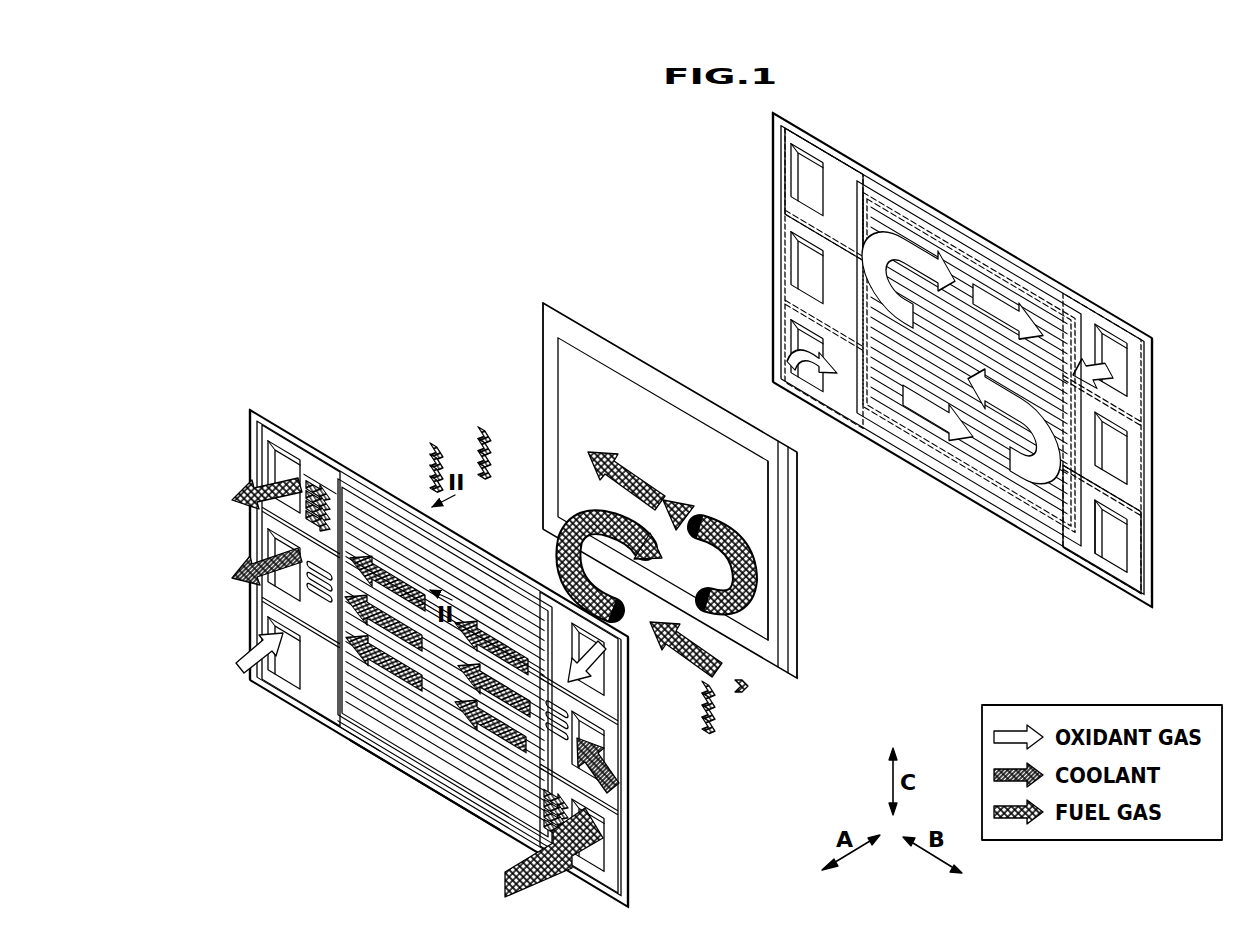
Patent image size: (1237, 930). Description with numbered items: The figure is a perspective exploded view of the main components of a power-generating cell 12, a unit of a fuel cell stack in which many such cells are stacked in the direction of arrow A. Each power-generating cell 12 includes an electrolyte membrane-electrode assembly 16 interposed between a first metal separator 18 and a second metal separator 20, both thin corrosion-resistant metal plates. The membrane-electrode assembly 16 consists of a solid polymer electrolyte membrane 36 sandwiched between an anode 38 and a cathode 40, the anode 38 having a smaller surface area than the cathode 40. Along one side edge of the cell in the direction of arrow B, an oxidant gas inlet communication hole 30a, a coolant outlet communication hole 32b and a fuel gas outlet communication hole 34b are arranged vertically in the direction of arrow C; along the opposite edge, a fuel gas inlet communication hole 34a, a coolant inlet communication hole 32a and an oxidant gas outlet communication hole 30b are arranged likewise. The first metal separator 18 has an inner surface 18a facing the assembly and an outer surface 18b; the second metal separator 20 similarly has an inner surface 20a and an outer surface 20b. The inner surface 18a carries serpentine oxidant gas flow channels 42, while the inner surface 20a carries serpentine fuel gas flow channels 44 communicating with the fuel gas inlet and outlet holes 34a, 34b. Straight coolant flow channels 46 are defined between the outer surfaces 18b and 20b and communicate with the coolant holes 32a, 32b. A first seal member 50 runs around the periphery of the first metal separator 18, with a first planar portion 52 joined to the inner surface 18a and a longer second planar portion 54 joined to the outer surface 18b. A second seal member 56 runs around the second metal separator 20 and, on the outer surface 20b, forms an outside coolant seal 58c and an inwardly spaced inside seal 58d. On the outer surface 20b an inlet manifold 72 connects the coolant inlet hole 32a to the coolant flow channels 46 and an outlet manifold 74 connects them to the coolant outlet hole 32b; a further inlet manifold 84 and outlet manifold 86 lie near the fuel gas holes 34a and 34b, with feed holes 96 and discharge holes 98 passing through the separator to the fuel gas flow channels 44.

The power-generating cell 12 is at (348, 291).
The electrolyte membrane-electrode assembly 16 is at (719, 490).
The first metal separator 18 is at (970, 377).
The inner surface of first metal separator 18a is at (1100, 565).
The outer surface of first metal separator 18b is at (1132, 583).
The second metal separator 20 is at (250, 405).
The inner surface of second metal separator 20a is at (515, 557).
The outer surface of second metal separator 20b is at (413, 772).
The oxidant gas inlet communication hole 30a is at (275, 624).
The oxidant gas outlet communication hole 30b is at (600, 692).
The coolant inlet communication hole 32a is at (605, 745).
The coolant outlet communication hole 32b is at (280, 540).
The fuel gas inlet communication hole 34a is at (598, 823).
The fuel gas outlet communication hole 34b is at (280, 462).
The solid polymer electrolyte membrane 36 is at (780, 505).
The anode 38 is at (760, 488).
The cathode 40 is at (852, 478).
The oxidant gas flow channels 42 is at (900, 235).
The fuel gas flow channels 44 is at (470, 580).
The coolant flow channels 46 is at (368, 515).
The first seal member 50 is at (1035, 278).
The first planar portion 52 is at (1022, 520).
The second planar portion 54 is at (990, 268).
The second seal member 56 is at (462, 822).
The outside seal 58c is at (336, 725).
The inside seal 58d is at (378, 742).
The inlet manifold 72 is at (572, 714).
The outlet manifold 74 is at (312, 604).
The inlet manifold 84 is at (560, 790).
The outlet manifold 86 is at (318, 478).
The feed holes 96 is at (542, 844).
The discharge holes 98 is at (331, 486).